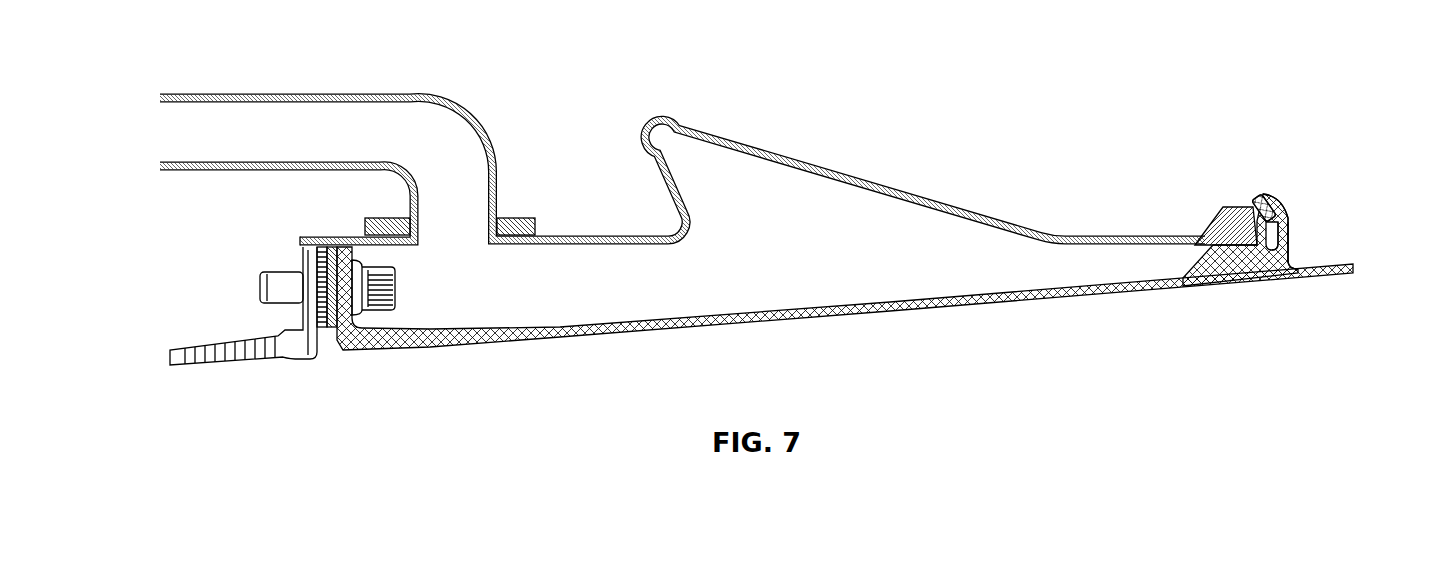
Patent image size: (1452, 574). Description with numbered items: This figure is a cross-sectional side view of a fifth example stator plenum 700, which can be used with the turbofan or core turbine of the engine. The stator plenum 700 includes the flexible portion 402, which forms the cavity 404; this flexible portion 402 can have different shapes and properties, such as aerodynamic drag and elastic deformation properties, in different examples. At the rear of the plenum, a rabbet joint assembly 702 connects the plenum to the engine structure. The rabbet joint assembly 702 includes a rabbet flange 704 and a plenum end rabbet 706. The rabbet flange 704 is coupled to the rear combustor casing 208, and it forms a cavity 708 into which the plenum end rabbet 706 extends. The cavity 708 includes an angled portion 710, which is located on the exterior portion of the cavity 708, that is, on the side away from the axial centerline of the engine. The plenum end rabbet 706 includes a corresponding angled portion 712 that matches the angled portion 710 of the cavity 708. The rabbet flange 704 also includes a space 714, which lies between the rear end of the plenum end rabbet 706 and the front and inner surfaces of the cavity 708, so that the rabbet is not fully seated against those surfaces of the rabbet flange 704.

The rear combustor casing 208 is at (950, 308).
The flexible portion 402 is at (678, 122).
The cavity 404 is at (745, 191).
The stator plenum 700 is at (1092, 153).
The rabbet joint assembly 702 is at (1278, 196).
The rabbet flange 704 is at (1264, 198).
The plenum end rabbet 706 is at (1209, 226).
The cavity 708 is at (1289, 246).
The angled portion 710 is at (1250, 240).
The corresponding angled portion 712 is at (1283, 210).
The space 714 is at (1271, 266).